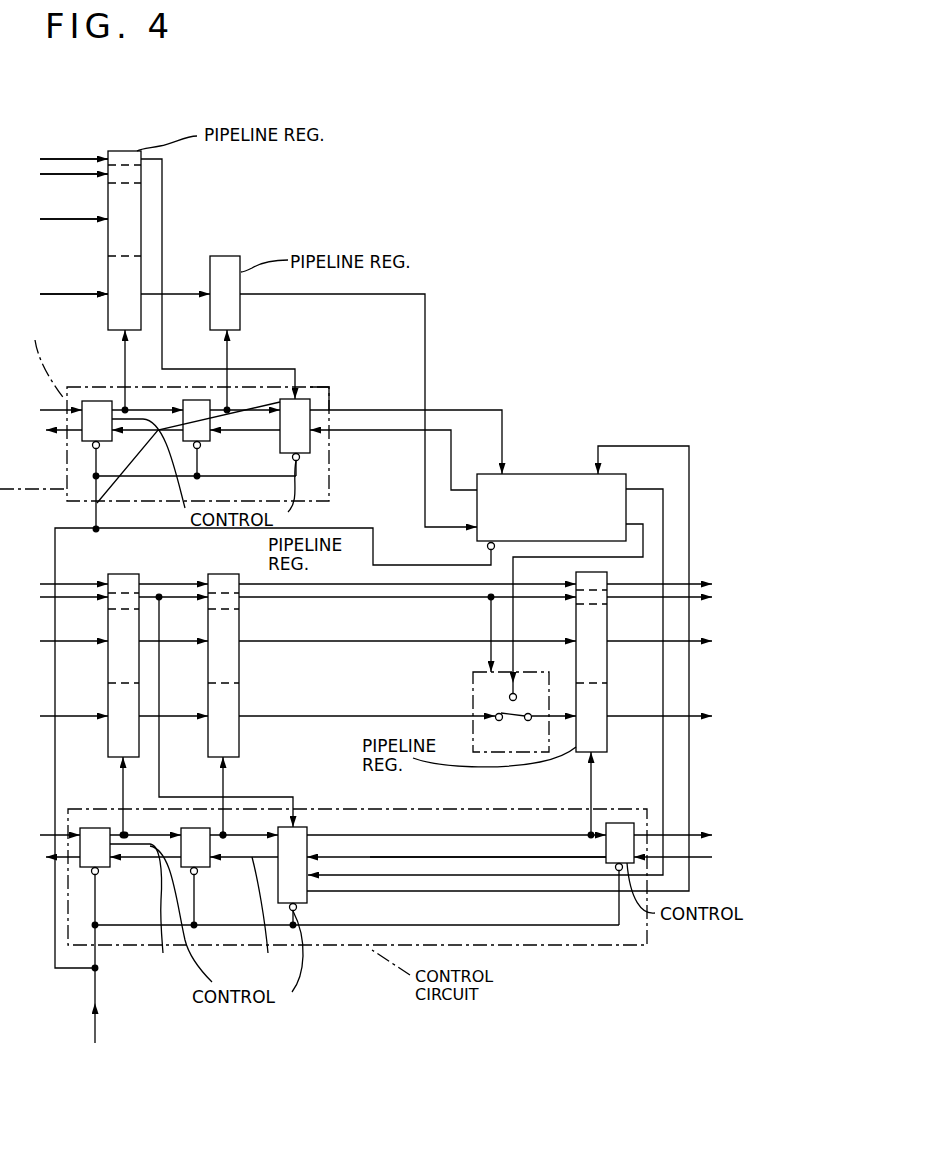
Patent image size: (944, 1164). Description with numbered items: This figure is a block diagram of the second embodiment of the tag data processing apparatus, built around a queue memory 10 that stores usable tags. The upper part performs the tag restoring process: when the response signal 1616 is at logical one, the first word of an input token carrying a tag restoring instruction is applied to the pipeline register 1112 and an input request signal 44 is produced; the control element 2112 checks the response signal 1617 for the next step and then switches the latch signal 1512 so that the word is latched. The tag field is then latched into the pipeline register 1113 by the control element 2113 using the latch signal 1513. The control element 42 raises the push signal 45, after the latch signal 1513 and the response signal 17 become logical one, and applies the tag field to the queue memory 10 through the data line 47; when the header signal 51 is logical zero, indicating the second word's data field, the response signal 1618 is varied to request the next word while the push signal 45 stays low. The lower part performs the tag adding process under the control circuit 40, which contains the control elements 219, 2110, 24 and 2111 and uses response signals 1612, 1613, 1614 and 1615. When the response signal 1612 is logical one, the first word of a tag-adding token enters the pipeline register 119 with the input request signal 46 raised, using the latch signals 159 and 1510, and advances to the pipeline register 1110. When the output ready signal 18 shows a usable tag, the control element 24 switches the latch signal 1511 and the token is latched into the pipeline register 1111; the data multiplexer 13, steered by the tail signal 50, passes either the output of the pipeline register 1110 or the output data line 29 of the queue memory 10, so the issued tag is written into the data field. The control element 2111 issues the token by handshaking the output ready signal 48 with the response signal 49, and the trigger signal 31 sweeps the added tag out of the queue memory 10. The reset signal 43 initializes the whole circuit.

The pipeline register 1112 is at (124, 149).
The pipeline register 1113 is at (227, 253).
The header signal 51 is at (164, 208).
The data line 47 is at (428, 320).
The queue memory 10 is at (539, 471).
The push signal 45 is at (468, 406).
The response signal 17 is at (453, 440).
The trigger signal 31 is at (690, 460).
The output ready signal 18 is at (663, 508).
The output data line 29 is at (645, 545).
The input request signal 44 is at (67, 405).
The control element 42 is at (327, 395).
The control element 2112 is at (97, 402).
The control element 2113 is at (208, 442).
The response signal 1618 is at (283, 400).
The latch signal 1512 is at (128, 360).
The latch signal 1513 is at (228, 355).
The response signal 1616 is at (57, 438).
The response signal 1617 is at (97, 505).
The pipeline register 119 is at (129, 563).
The pipeline register 1110 is at (235, 563).
The pipeline register 1111 is at (620, 615).
The data multiplexer 13 is at (473, 683).
The latch signal 159 is at (122, 778).
The latch signal 1510 is at (223, 778).
The latch signal 1511 is at (588, 778).
The tail signal 50 is at (240, 793).
The control circuit 40 is at (122, 950).
The control element 219 is at (105, 867).
The control element 2110 is at (205, 867).
The control element 24 is at (303, 823).
The control element 2111 is at (617, 823).
The input request signal 46 is at (60, 838).
The response signal 1612 is at (60, 860).
The output ready signal 48 is at (697, 830).
The response signal 49 is at (693, 856).
The reset signal 43 is at (93, 1020).
The response signal 1613 is at (148, 914).
The response signal 1614 is at (262, 921).
The response signal 1615 is at (370, 857).